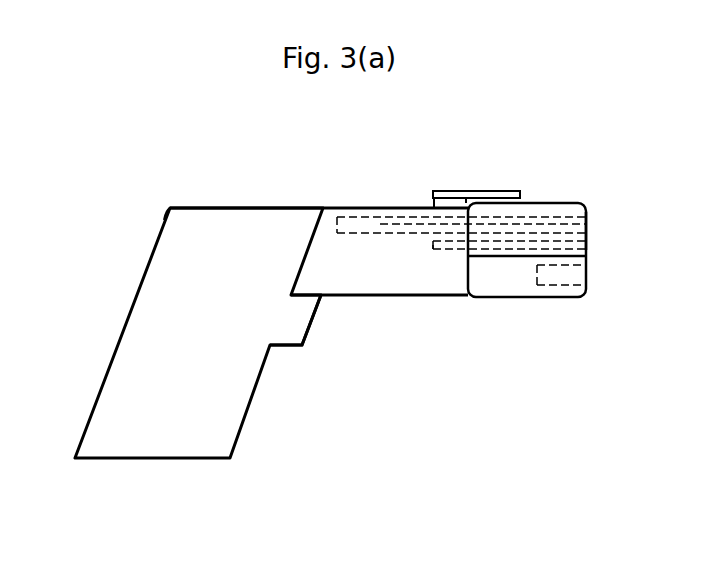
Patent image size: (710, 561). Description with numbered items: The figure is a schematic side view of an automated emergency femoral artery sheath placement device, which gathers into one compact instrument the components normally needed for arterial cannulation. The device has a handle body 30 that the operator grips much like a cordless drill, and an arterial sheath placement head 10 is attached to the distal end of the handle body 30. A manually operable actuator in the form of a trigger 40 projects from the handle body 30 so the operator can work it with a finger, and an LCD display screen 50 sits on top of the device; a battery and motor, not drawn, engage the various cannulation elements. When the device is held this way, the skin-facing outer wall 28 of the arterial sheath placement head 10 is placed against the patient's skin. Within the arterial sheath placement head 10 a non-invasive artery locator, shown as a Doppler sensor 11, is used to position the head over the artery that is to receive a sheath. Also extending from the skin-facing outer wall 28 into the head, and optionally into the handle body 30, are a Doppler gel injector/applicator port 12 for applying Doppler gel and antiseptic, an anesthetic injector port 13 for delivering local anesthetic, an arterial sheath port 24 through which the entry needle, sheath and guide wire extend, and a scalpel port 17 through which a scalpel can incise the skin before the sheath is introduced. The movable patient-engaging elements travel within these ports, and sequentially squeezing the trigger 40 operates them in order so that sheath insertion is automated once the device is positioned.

The arterial sheath placement head 10 is at (510, 282).
The Doppler sensor 11 is at (562, 283).
The Doppler gel injector/applicator port 12 is at (457, 247).
The anesthetic injector port 13 is at (509, 247).
The scalpel port 17 is at (382, 226).
The arterial sheath port 24 is at (336, 223).
The skin-facing outer wall 28 is at (587, 227).
The handle body 30 is at (187, 250).
The trigger 40 is at (318, 330).
The LCD display screen 50 is at (495, 190).